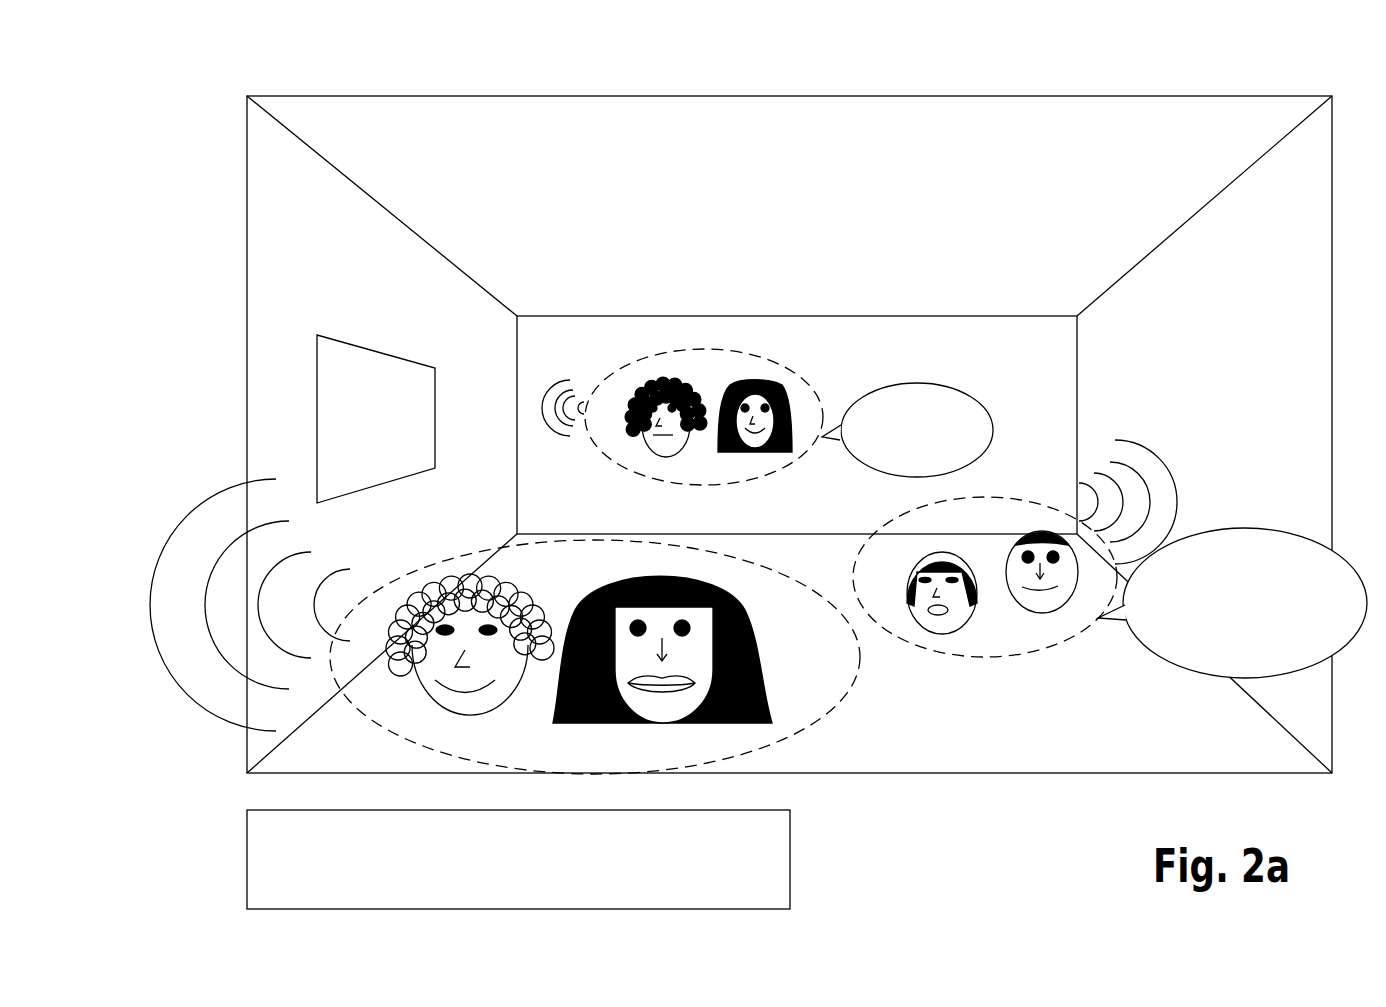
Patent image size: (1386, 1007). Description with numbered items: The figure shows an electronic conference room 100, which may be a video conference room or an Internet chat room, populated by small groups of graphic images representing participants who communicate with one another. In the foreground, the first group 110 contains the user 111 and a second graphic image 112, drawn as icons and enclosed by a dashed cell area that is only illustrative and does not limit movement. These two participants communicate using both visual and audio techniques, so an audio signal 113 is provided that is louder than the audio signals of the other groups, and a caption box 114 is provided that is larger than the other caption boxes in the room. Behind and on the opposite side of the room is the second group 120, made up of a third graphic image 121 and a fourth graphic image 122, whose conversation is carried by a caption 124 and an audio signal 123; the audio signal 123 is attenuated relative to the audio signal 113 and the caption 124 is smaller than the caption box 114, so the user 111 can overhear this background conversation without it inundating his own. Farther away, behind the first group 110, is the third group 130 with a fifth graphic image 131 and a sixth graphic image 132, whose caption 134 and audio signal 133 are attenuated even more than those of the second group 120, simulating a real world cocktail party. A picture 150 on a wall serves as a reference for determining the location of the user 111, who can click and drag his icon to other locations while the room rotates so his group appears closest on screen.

The electronic conference room 100 is at (997, 75).
The first group 110 is at (815, 724).
The first graphic image (user) 111 is at (440, 578).
The second graphic image 112 is at (643, 572).
The audio signal 113 is at (227, 485).
The caption box 114 is at (792, 858).
The second group 120 is at (1055, 677).
The third graphic image 121 is at (930, 552).
The fourth graphic image 122 is at (1047, 530).
The audio signal 123 is at (1167, 467).
The caption box 124 is at (1230, 527).
The third group 130 is at (752, 343).
The fifth graphic image 131 is at (655, 382).
The sixth graphic image 132 is at (743, 380).
The audio signal 133 is at (548, 394).
The caption 134 is at (945, 382).
The picture 150 is at (352, 383).